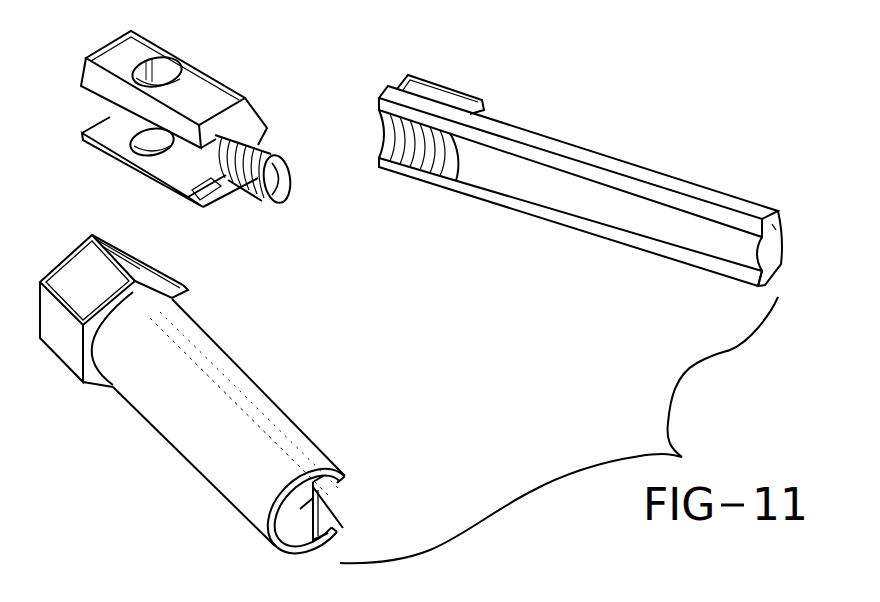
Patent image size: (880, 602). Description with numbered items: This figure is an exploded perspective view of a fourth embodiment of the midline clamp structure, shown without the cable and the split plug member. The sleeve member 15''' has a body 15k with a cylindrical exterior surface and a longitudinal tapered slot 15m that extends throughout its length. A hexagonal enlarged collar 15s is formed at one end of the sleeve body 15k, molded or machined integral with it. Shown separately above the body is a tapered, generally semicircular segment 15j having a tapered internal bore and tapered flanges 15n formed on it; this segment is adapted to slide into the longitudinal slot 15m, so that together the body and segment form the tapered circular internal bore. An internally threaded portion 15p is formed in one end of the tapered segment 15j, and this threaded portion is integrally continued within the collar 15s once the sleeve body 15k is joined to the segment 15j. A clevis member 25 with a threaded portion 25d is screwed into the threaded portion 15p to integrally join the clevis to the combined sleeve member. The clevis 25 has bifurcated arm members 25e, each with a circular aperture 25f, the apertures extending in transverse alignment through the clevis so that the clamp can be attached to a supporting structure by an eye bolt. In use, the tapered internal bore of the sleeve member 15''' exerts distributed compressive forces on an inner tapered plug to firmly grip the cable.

The clevis member 25 is at (183, 105).
The bifurcated arm members 25e is at (132, 42).
The circular aperture 25f is at (165, 68).
The threaded portion 25d is at (259, 151).
The tapered generally semicircular segment 15j is at (580, 189).
The tapered flanges 15n is at (594, 163).
The internally threaded portion 15p is at (415, 150).
The sleeve member 15''' is at (221, 394).
The hexagonal enlarged collar 15s is at (148, 267).
The sleeve body 15k is at (170, 420).
The longitudinal tapered slot 15m is at (330, 495).